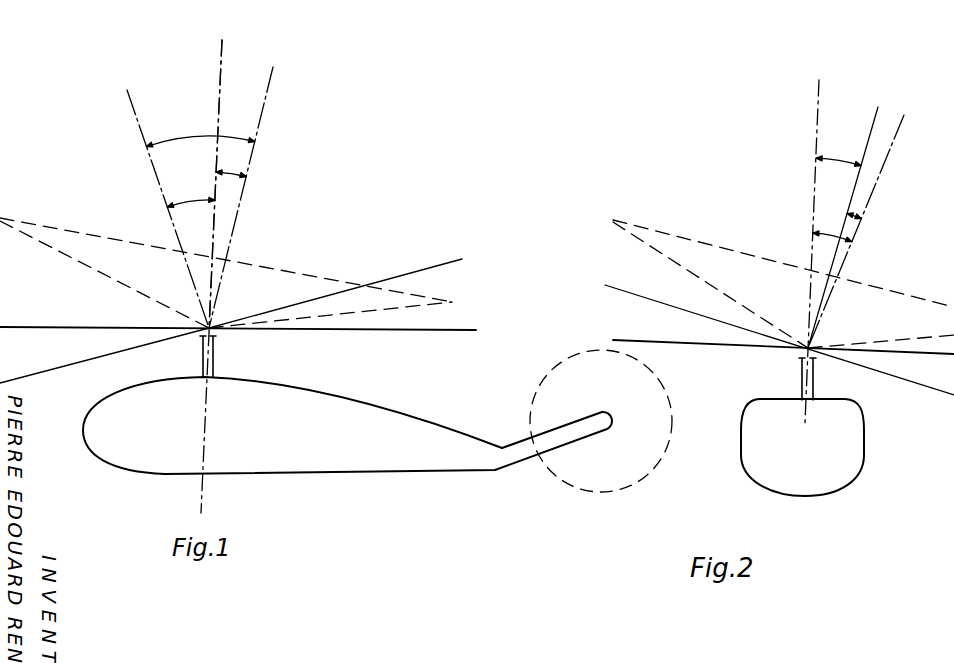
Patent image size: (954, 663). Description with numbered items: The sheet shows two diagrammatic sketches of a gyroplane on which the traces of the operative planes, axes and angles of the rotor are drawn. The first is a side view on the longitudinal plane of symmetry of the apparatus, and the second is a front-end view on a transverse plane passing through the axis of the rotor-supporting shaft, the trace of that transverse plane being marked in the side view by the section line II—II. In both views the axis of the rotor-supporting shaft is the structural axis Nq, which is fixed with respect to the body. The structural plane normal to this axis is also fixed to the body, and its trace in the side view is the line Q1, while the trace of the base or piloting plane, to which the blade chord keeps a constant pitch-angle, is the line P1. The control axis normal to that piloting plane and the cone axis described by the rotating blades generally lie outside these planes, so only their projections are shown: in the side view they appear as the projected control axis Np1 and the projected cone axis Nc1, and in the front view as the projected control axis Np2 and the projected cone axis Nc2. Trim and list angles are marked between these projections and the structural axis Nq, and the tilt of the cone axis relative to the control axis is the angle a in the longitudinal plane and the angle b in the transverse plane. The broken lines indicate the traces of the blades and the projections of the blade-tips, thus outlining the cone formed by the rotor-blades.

In FIG. 1, the section line II— II is at (203, 277).
In FIG. 1, the structural axis Nq is at (226, 184).
In FIG. 2, the structural axis Nq is at (812, 251).
In FIG. 1, the projection of the control axis on the longitudinal plane Np1 is at (168, 209).
In FIG. 1, the projection of the cone axis on the longitudinal plane Nc1 is at (256, 197).
In FIG. 1, the tilting angle of the cone axis in the longitudinal plane a is at (201, 134).
In FIG. 1, the trace of the control plane P1 is at (335, 289).
In FIG. 1, the trace of the structural plane Q1 is at (238, 324).
In FIG. 2, the projection of the cone axis on the transverse plane Nc2 is at (845, 227).
In FIG. 2, the projection of the control axis on the transverse plane Np2 is at (869, 231).
In FIG. 2, the tilting angle of the cone axis in the transverse plane b is at (865, 209).